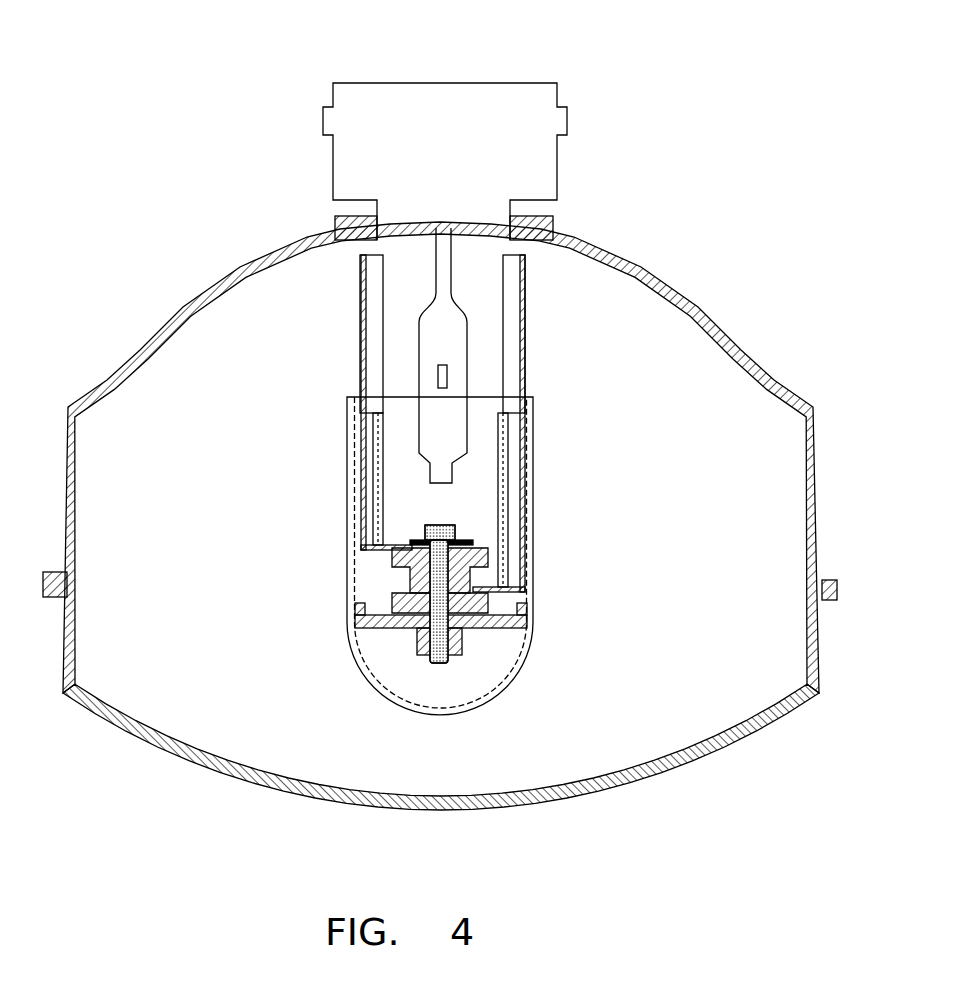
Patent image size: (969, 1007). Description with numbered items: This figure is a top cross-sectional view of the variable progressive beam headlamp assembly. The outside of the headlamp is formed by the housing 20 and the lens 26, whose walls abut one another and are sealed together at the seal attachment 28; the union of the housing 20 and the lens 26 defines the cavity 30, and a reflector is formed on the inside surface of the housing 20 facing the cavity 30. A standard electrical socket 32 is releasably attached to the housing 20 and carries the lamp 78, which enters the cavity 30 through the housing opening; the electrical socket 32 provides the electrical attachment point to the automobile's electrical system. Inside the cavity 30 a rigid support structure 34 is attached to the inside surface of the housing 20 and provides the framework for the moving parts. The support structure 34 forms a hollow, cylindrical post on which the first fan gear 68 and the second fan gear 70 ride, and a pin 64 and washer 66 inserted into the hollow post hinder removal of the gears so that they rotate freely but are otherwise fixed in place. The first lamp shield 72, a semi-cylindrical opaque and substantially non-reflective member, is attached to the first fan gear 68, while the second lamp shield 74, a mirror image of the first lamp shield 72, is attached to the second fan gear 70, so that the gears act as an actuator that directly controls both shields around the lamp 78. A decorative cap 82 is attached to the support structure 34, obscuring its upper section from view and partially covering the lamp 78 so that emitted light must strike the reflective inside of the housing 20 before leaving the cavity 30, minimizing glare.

The housing 20 is at (190, 300).
The lens 26 is at (683, 765).
The seal attachment 28 is at (843, 568).
The cavity 30 is at (694, 528).
The electrical socket 32 is at (443, 107).
The support structure 34 is at (512, 637).
The pin 64 is at (445, 523).
The washer 66 is at (473, 541).
The first fan gear 68 is at (392, 562).
The second fan gear 70 is at (392, 600).
The first lamp shield 72 is at (387, 485).
The second lamp shield 74 is at (497, 467).
The lamp 78 is at (425, 322).
The decorative cap 82 is at (480, 707).